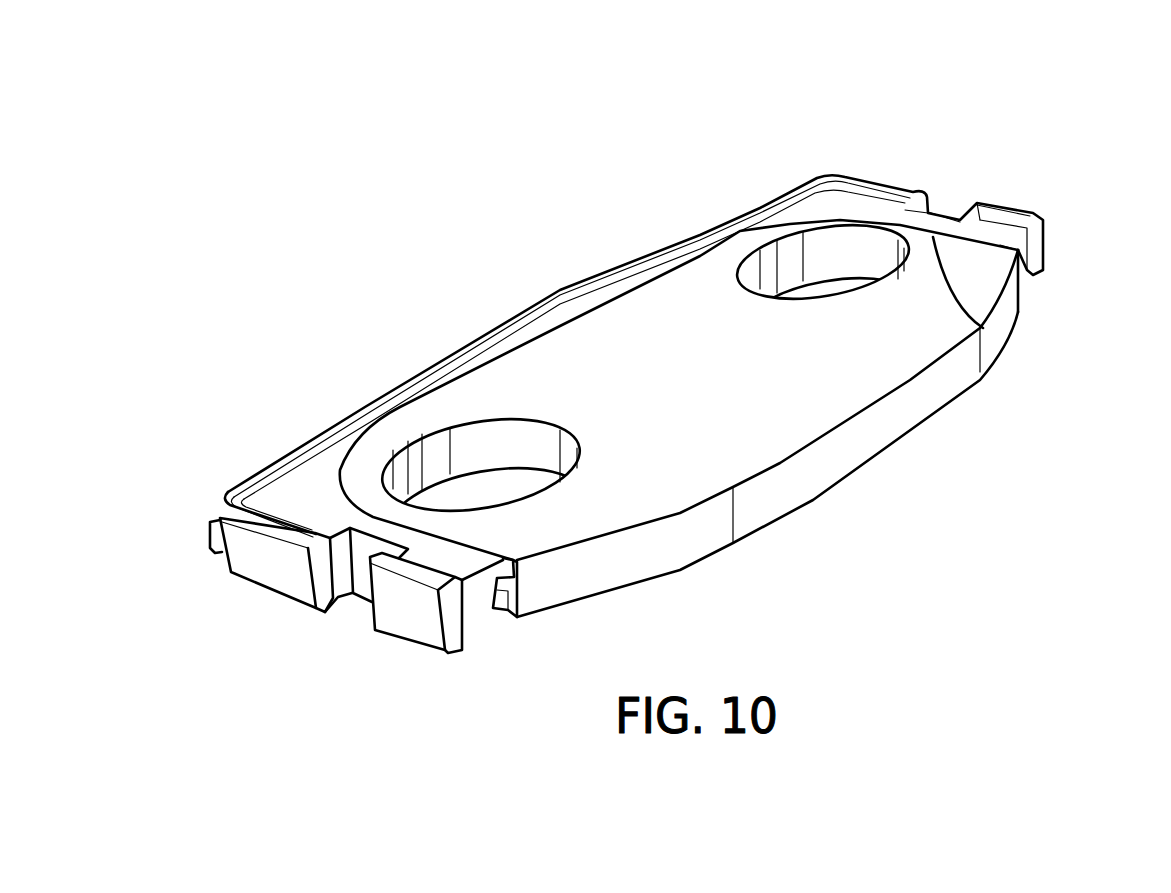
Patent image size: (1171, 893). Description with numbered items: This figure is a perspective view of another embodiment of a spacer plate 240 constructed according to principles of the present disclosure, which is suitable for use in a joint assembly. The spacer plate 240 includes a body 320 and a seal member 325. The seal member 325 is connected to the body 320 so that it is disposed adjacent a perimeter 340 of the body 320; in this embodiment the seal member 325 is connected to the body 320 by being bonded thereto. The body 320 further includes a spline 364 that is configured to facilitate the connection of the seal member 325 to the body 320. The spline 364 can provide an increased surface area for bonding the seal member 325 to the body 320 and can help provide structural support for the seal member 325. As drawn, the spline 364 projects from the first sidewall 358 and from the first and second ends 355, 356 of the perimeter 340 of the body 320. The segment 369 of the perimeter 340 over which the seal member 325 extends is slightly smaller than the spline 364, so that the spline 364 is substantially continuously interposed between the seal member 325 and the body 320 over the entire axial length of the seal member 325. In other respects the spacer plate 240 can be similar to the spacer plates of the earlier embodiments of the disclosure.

The spacer plate 240 is at (288, 214).
The body 320 is at (723, 447).
The seal member 325 is at (527, 305).
The perimeter 340 is at (638, 267).
The first end 355 is at (433, 533).
The second end 356 is at (985, 332).
The first sidewall 358 is at (632, 287).
The spline 364 is at (490, 600).
The segment 369 is at (707, 233).